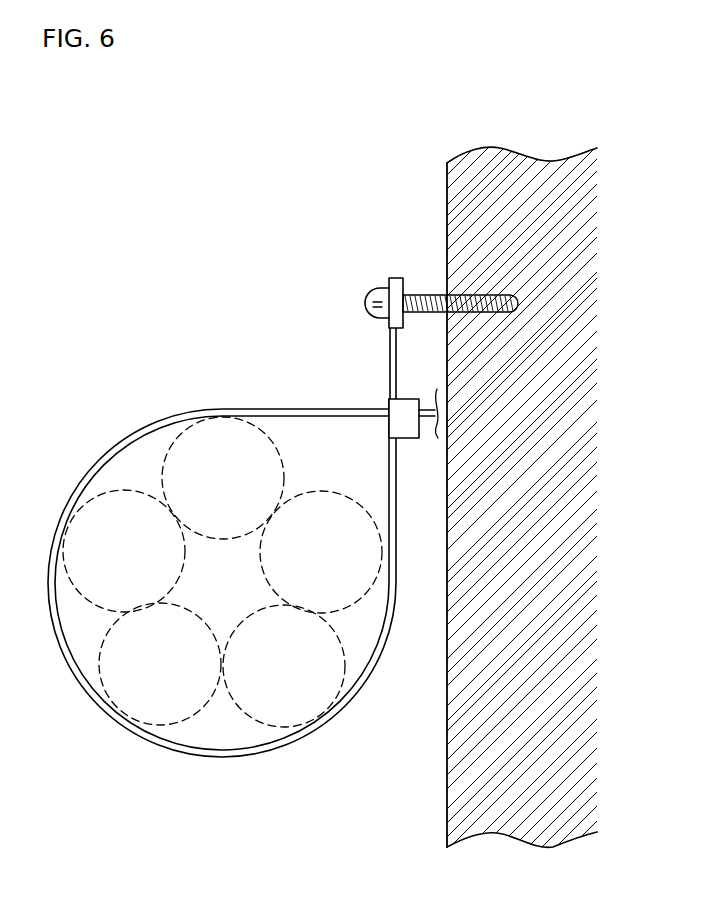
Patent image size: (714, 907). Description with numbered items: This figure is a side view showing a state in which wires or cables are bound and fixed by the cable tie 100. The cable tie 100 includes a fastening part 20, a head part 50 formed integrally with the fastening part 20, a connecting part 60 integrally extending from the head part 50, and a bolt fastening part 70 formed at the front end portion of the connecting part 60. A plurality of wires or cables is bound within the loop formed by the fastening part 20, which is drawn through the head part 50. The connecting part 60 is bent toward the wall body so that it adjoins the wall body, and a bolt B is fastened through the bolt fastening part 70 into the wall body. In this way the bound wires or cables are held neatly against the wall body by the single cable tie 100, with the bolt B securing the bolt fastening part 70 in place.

The cable tie 100 is at (219, 333).
The fastening part 20 is at (148, 428).
The head part 50 is at (397, 424).
The connecting part 60 is at (392, 363).
The bolt fastening part 70 is at (395, 275).
The bolt B is at (376, 303).
The wires or cables wires is at (108, 494).
The wall body wall is at (523, 183).